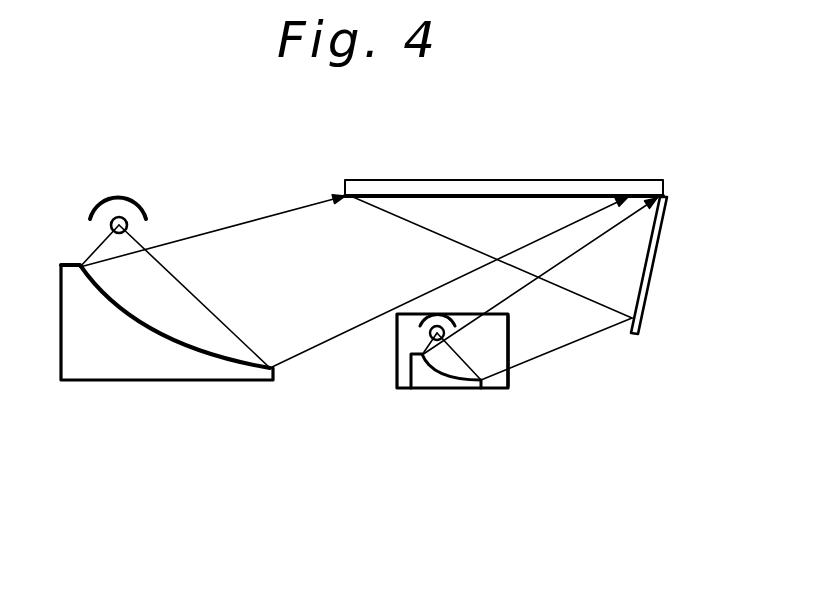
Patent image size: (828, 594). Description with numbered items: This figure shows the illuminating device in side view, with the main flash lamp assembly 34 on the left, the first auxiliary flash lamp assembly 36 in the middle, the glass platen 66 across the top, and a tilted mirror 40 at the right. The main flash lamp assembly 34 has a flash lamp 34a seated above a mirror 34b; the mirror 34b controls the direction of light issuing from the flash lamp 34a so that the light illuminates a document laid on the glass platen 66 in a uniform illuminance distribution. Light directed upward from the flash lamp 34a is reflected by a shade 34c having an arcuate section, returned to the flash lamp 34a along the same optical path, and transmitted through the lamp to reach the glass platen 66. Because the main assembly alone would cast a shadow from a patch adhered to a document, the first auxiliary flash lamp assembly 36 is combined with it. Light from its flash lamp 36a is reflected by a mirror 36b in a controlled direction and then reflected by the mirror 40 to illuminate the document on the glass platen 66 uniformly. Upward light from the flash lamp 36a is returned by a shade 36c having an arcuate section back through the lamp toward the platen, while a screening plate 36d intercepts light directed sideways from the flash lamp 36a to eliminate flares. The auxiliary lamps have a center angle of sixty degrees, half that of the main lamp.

The main flash lamp assembly 34 is at (72, 213).
The flash lamp 34a is at (128, 228).
The mirror 34b is at (192, 354).
The shade 34c is at (118, 200).
The first auxiliary flash lamp assembly 36 is at (502, 402).
The flash lamp 36a is at (430, 335).
The mirror 36b is at (430, 390).
The shade 36c is at (453, 313).
The screening plate 36d is at (504, 330).
The mirror 40 is at (653, 263).
The glass platen 66 is at (587, 179).